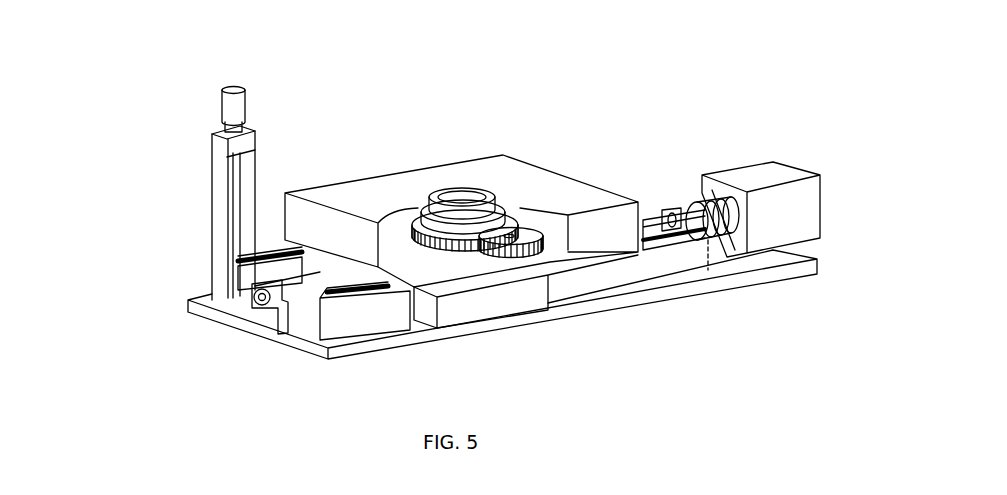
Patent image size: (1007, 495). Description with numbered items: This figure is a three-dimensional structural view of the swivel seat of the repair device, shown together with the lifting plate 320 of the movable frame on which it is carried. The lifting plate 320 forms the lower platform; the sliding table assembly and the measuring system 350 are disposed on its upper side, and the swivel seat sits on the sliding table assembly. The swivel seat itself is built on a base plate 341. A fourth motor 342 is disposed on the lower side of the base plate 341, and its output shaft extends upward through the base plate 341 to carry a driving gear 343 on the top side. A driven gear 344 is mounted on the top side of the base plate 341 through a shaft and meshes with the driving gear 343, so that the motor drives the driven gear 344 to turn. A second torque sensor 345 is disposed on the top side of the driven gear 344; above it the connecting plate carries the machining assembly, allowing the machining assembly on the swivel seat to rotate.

The lifting plate 320 is at (212, 302).
The base plate 341 is at (420, 260).
The fourth motor 342 is at (537, 297).
The driving gear 343 is at (530, 233).
The driven gear 344 is at (488, 215).
The second torque sensor 345 is at (463, 195).
The measuring system 350 is at (232, 100).